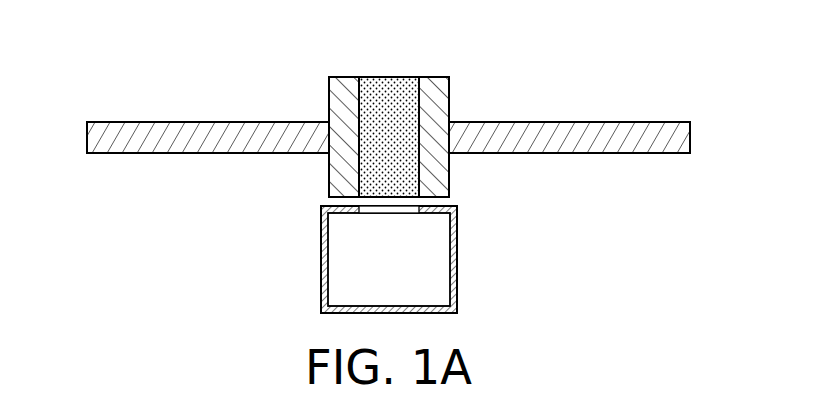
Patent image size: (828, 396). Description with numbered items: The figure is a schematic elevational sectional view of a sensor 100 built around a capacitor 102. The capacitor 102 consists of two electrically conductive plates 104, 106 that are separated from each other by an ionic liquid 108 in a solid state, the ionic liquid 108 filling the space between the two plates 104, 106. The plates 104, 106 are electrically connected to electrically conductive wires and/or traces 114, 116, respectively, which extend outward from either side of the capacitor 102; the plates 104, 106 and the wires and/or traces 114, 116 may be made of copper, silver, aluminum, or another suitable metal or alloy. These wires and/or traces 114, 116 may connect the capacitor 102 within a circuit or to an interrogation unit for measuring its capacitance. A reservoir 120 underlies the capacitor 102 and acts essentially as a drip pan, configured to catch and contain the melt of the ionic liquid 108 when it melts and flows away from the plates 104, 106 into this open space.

The sensor 100 is at (152, 104).
The capacitor 102 is at (464, 78).
The electrically conductive plate 104 is at (329, 97).
The electrically conductive plate 106 is at (449, 100).
The ionic liquid 108 is at (390, 77).
The electrically conductive wire and/or trace 114 is at (277, 153).
The electrically conductive wire and/or trace 116 is at (542, 153).
The reservoir 120 is at (457, 233).